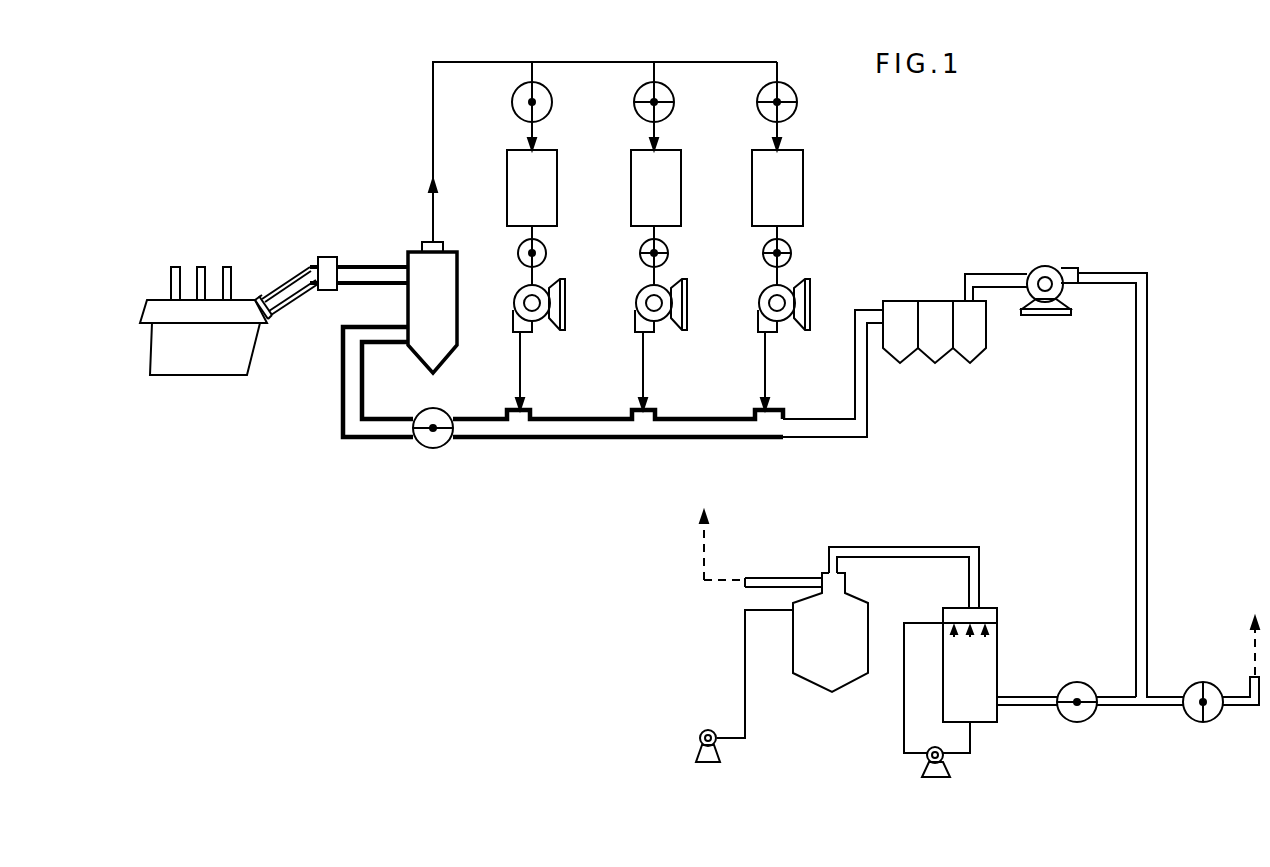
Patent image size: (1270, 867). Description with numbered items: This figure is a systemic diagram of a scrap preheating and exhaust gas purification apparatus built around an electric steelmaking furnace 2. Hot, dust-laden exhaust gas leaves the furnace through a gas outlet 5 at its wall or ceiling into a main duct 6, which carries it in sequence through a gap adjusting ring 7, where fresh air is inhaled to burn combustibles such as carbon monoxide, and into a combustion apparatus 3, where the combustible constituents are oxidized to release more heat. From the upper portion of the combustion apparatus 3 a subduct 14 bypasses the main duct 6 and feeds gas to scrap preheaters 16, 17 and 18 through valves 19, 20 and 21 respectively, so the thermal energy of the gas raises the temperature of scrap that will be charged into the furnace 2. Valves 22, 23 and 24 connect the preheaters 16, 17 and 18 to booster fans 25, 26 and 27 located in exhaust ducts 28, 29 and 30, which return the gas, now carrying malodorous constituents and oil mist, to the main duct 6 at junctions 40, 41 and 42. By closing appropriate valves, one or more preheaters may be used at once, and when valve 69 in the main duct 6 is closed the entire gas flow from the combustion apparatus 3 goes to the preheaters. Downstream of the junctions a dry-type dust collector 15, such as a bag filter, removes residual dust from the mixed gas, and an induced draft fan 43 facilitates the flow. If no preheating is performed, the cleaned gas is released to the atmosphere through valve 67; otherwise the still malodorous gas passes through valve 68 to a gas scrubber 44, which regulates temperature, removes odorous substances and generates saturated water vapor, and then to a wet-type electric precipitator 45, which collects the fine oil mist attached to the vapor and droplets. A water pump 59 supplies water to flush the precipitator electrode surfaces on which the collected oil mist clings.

The electric steelmaking furnace 2 is at (210, 363).
The combustion apparatus 3 is at (437, 318).
The gas outlet 5 is at (267, 318).
The main duct 6 is at (342, 401).
The gap adjusting ring 7 is at (323, 257).
The subduct 14 is at (484, 62).
The dust collector 15 is at (921, 301).
The scrap preheater 16 is at (545, 202).
The scrap preheater 17 is at (669, 202).
The scrap preheater 18 is at (792, 202).
The valve 19 is at (514, 97).
The valve 20 is at (636, 95).
The valve 21 is at (757, 90).
The valve 22 is at (546, 256).
The valve 23 is at (668, 256).
The valve 24 is at (791, 256).
The booster fan 25 is at (514, 296).
The booster fan 26 is at (636, 297).
The booster fan 27 is at (759, 300).
The exhaust duct 28 is at (521, 370).
The exhaust duct 29 is at (644, 372).
The exhaust duct 30 is at (766, 372).
The junction 40 is at (519, 422).
The junction 41 is at (645, 422).
The junction 42 is at (765, 422).
The induced draft fan 43 is at (1040, 268).
The gas scrubber 44 is at (998, 653).
The wet-type electric precipitator 45 is at (870, 633).
The water pump 59 is at (697, 758).
The valve 67 is at (1202, 682).
The valve 68 is at (1080, 682).
The valve 69 is at (425, 447).